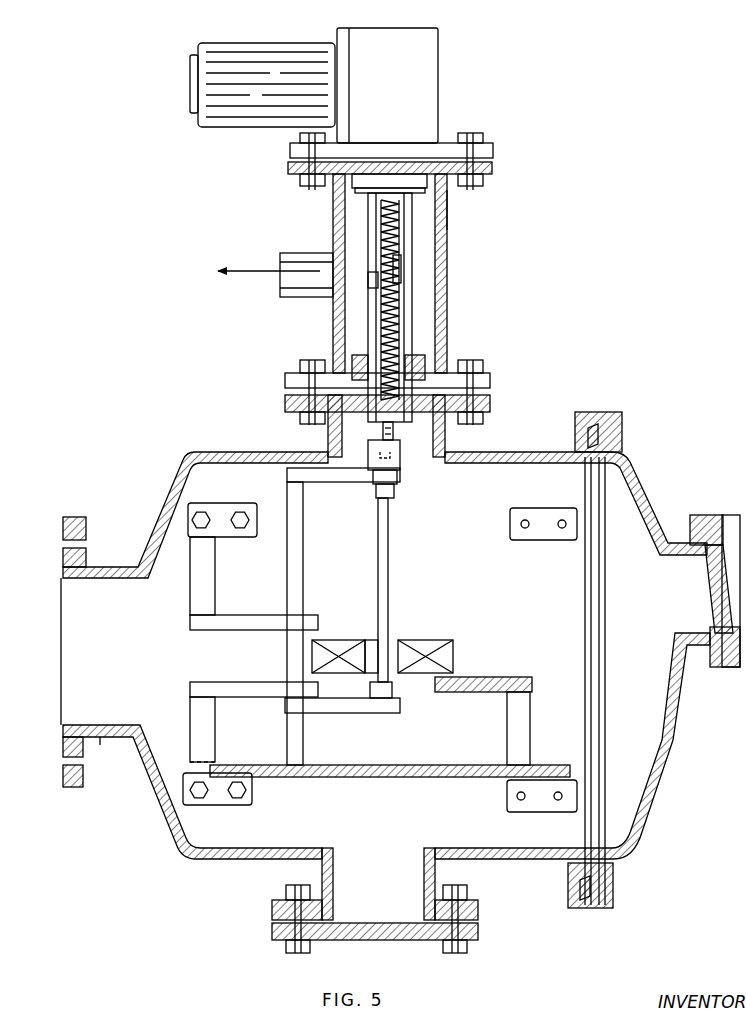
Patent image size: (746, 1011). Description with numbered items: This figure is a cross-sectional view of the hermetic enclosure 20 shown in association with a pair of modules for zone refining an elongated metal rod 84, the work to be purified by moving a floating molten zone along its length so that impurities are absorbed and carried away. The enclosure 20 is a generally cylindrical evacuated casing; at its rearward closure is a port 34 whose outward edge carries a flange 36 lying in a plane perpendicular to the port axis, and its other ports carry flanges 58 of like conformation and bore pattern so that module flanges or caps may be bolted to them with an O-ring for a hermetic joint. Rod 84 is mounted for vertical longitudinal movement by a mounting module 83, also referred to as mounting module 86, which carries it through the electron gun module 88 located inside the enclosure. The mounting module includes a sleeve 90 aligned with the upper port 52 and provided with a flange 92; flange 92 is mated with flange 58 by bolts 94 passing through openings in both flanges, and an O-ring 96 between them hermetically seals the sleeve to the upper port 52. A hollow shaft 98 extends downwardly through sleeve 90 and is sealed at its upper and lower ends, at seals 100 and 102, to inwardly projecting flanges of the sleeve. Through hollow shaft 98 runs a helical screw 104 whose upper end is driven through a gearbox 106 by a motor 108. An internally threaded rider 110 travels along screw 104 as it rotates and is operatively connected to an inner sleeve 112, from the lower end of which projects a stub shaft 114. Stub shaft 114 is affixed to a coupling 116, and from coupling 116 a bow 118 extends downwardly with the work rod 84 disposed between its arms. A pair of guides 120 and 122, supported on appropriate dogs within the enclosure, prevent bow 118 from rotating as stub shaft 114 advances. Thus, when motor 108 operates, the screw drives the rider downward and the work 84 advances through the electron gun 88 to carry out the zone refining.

The hermetic enclosure 20 is at (186, 441).
The port 34 is at (100, 737).
The flange 36 is at (66, 787).
The upper port 52 is at (448, 440).
The flange 58 is at (480, 398).
The mounting module 83 is at (456, 237).
The metal rod 84 is at (388, 547).
The mounting module 86 is at (418, 264).
The electron gun module 88 is at (426, 638).
The sleeve 90 is at (442, 207).
The flange 92 is at (480, 382).
The bolts 94 is at (472, 370).
The O-ring 96 is at (300, 390).
The hollow shaft 98 is at (358, 211).
The seal 100 is at (418, 154).
The seal 102 is at (354, 357).
The helical screw 104 is at (418, 316).
The gearbox 106 is at (402, 59).
The motor 108 is at (256, 22).
The internally threaded rider 110 is at (368, 250).
The inner sleeve 112 is at (374, 279).
The stub shaft 114 is at (383, 435).
The coupling 116 is at (400, 462).
The bow 118 is at (298, 528).
The guide 120 is at (236, 626).
The guide 122 is at (222, 690).